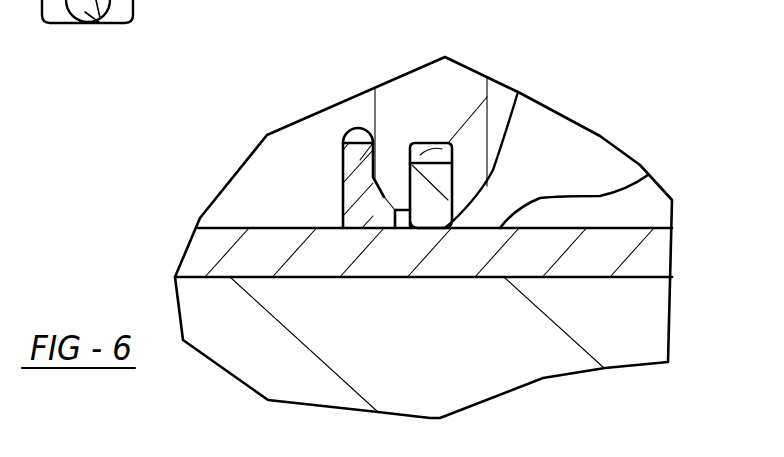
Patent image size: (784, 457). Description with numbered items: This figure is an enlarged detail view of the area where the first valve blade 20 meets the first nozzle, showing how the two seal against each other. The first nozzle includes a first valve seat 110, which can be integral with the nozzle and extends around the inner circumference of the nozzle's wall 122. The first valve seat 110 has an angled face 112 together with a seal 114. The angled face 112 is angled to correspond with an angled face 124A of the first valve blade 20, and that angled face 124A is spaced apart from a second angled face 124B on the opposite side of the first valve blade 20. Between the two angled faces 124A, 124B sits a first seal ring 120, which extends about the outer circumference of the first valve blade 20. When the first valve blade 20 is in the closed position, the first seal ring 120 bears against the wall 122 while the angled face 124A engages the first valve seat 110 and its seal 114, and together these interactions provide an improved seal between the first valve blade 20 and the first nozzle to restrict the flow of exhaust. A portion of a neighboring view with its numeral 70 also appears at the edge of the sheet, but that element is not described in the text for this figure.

The first valve blade 20 is at (445, 97).
The first valve seat 110 is at (343, 201).
The angled face 112 is at (380, 210).
The seal 114 is at (366, 128).
The first seal ring 120 is at (485, 188).
The wall 122 is at (648, 175).
The angled face 124A is at (380, 210).
The angled face 124B is at (437, 175).
The component of adjacent figure 70 is at (142, 0).